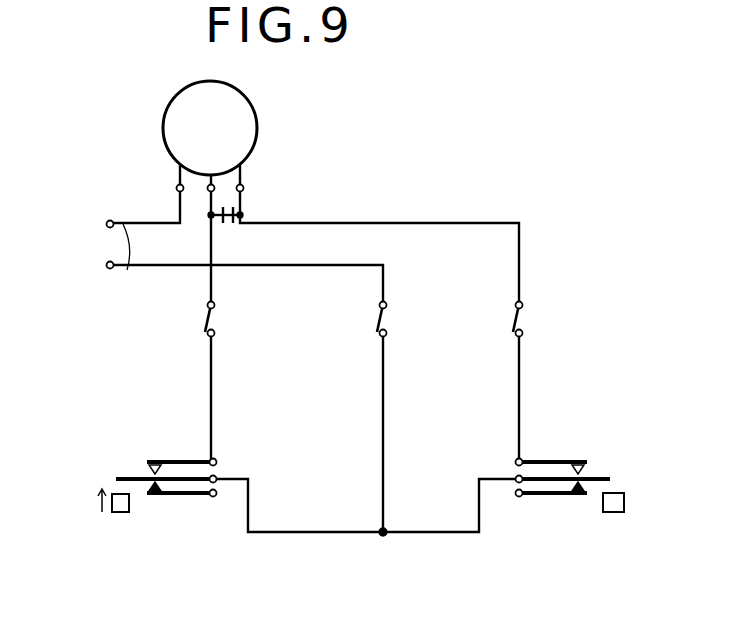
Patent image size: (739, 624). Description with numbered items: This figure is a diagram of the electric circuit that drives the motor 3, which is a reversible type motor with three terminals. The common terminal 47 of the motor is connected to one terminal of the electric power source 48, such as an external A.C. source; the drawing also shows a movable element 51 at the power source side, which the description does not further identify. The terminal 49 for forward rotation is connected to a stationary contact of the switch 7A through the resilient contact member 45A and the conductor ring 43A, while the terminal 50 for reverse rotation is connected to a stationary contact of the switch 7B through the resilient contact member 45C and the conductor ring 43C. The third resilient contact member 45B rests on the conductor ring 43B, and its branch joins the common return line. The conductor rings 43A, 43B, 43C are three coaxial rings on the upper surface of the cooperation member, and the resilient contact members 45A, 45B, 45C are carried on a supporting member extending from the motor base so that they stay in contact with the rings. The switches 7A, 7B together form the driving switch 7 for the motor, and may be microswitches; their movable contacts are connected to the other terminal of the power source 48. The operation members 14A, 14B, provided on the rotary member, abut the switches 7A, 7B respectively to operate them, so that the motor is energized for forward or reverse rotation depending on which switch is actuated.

The motor 3 is at (247, 122).
The common terminal 47 is at (177, 189).
The terminal for forward rotation 49 is at (208, 191).
The terminal for reverse rotation 50 is at (244, 190).
The electric power source 48 is at (113, 227).
The movable contact 51 is at (127, 270).
The resilient contact member 45A is at (208, 318).
The electric conductor ring 43A is at (214, 336).
The resilient contact member 45B is at (376, 314).
The electric conductor ring 43B is at (386, 336).
The resilient contact member 45C is at (512, 318).
The electric conductor ring 43C is at (522, 336).
The driving switch 7 is at (126, 460).
The switch for forward rotation 7A is at (157, 461).
The switch for reverse rotation 7B is at (578, 461).
The operation member 14A is at (120, 512).
The operation member 14B is at (613, 512).